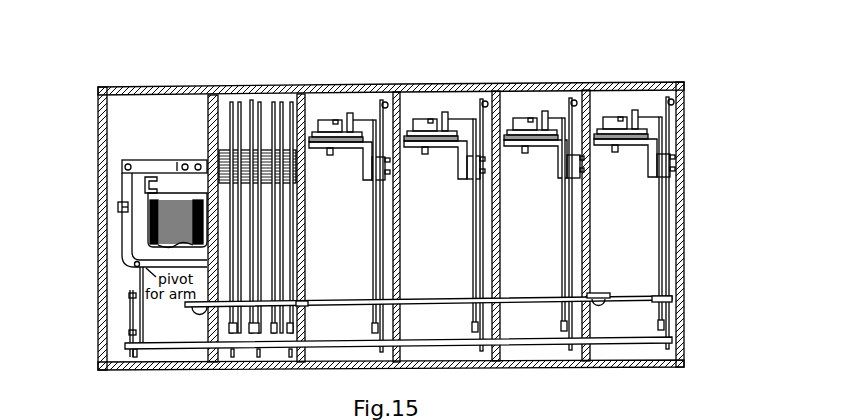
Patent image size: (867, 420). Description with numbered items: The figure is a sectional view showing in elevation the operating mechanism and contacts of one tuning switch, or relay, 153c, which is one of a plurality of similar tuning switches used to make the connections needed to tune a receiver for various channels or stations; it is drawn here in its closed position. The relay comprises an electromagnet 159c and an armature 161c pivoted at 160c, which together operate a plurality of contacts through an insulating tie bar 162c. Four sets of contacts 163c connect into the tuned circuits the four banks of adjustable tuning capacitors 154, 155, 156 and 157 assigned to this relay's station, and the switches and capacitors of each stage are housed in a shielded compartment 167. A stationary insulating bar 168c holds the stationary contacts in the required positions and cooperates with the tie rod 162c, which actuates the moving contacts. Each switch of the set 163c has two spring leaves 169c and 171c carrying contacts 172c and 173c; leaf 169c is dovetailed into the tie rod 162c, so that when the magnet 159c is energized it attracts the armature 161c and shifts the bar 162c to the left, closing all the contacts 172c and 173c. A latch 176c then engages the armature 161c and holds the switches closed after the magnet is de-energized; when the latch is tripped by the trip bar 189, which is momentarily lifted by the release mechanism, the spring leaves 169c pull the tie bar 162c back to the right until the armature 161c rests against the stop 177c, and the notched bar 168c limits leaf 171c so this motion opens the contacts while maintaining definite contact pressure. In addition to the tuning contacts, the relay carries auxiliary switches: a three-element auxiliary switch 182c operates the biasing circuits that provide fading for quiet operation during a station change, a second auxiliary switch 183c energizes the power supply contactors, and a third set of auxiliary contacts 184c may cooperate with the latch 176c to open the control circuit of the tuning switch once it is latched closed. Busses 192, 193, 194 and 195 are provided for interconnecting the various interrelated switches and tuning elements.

The tuning switch 153c is at (106, 136).
The bank of adjustable tuning capacitors 154 is at (329, 117).
The bank of adjustable tuning capacitors 155 is at (419, 116).
The bank of adjustable tuning capacitors 156 is at (523, 116).
The bank of adjustable tuning capacitors 157 is at (616, 116).
The bus 192 is at (386, 102).
The bus 193 is at (485, 102).
The bus 194 is at (576, 104).
The shielded compartment 167 is at (549, 104).
The bus 195 is at (682, 92).
The latch 176c is at (128, 160).
The trip bar 189 is at (158, 190).
The stop 177c is at (118, 206).
The electromagnet 159c is at (172, 222).
The pivot 160c is at (136, 268).
The armature 161c is at (140, 292).
The auxiliary contacts 184c is at (238, 330).
The auxiliary switch 183c is at (256, 332).
The insulating tie bar 162c is at (342, 344).
The auxiliary switch 182c is at (305, 303).
The contacts 163c is at (385, 276).
The stationary insulating bar 168c is at (512, 300).
The spring leaf 171c is at (660, 208).
The spring leaf 169c is at (668, 208).
The contact 172c is at (665, 326).
The contact 173c is at (664, 326).